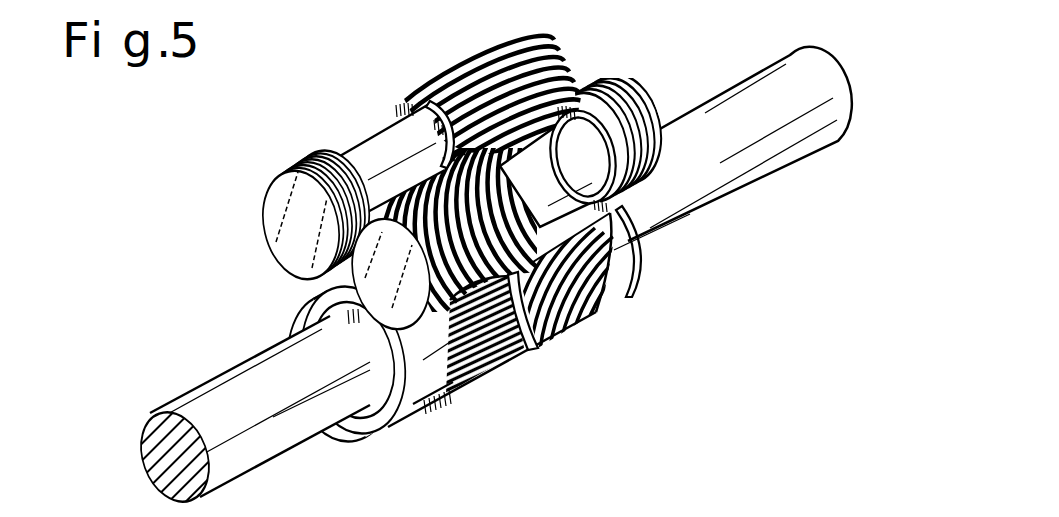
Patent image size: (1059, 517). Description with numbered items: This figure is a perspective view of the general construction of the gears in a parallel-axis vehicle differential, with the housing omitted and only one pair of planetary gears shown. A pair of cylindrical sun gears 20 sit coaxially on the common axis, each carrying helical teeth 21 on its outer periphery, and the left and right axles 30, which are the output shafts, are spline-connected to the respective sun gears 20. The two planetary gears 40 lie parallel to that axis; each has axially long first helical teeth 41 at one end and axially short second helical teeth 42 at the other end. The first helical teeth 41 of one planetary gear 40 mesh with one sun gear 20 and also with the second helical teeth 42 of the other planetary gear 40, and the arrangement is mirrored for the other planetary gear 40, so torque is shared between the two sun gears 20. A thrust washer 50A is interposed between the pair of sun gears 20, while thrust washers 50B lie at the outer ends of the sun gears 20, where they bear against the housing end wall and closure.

The sun gear 20 is at (559, 365).
The helical teeth 21 is at (564, 314).
The axle 30 is at (229, 378).
The planetary gear 40 is at (485, 176).
The first helical teeth 41 is at (478, 190).
The second helical teeth 42 is at (485, 190).
The thrust washer 50A is at (537, 347).
The thrust washer 50B is at (410, 394).